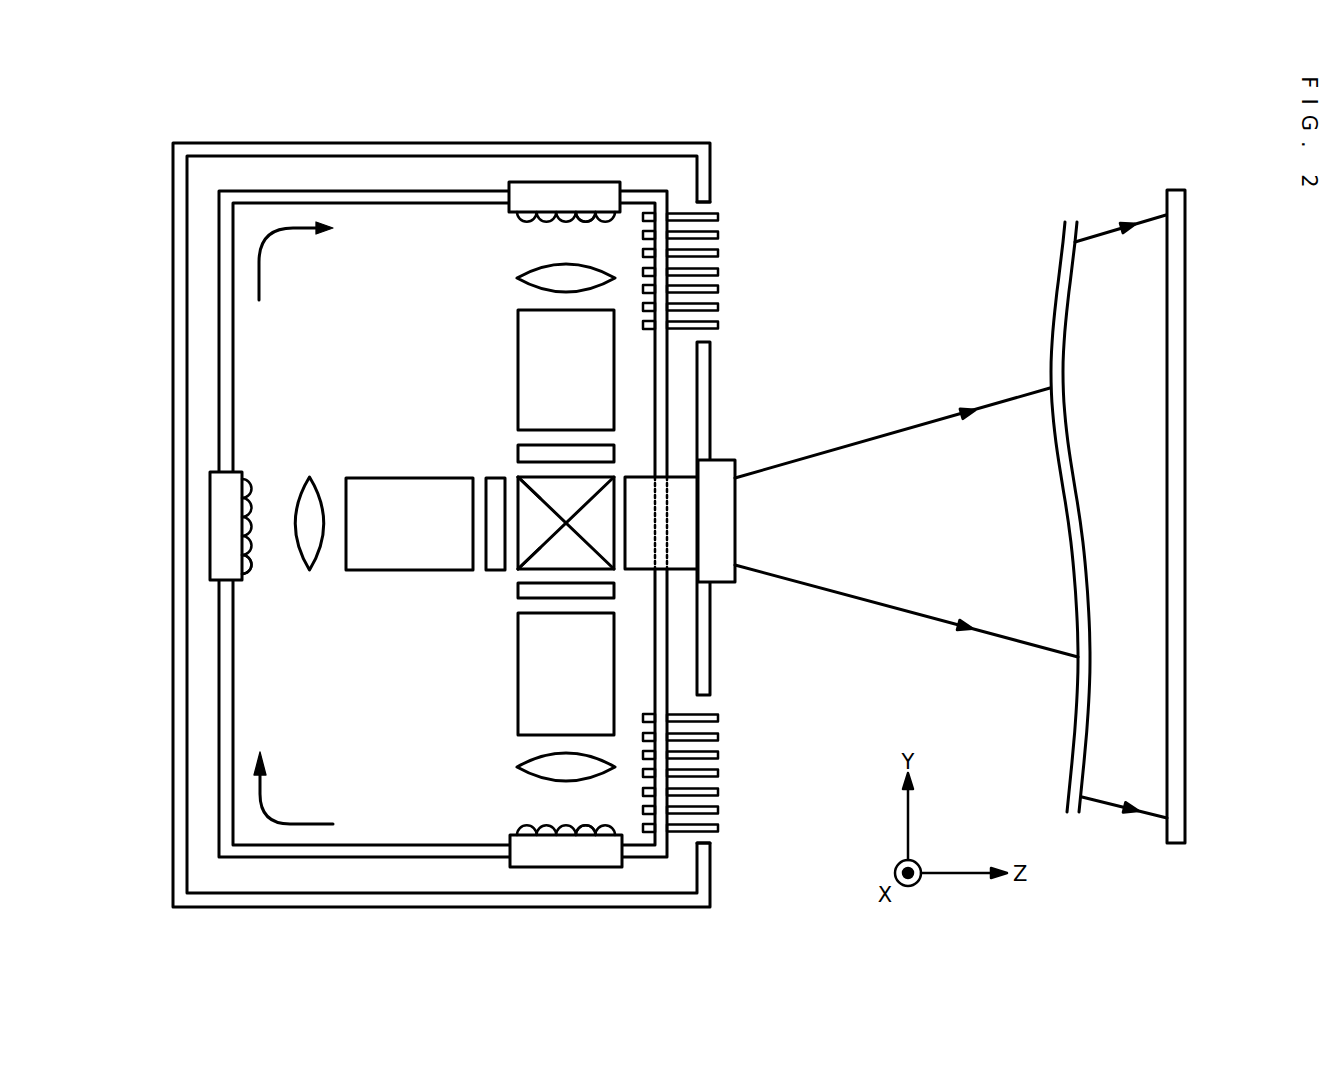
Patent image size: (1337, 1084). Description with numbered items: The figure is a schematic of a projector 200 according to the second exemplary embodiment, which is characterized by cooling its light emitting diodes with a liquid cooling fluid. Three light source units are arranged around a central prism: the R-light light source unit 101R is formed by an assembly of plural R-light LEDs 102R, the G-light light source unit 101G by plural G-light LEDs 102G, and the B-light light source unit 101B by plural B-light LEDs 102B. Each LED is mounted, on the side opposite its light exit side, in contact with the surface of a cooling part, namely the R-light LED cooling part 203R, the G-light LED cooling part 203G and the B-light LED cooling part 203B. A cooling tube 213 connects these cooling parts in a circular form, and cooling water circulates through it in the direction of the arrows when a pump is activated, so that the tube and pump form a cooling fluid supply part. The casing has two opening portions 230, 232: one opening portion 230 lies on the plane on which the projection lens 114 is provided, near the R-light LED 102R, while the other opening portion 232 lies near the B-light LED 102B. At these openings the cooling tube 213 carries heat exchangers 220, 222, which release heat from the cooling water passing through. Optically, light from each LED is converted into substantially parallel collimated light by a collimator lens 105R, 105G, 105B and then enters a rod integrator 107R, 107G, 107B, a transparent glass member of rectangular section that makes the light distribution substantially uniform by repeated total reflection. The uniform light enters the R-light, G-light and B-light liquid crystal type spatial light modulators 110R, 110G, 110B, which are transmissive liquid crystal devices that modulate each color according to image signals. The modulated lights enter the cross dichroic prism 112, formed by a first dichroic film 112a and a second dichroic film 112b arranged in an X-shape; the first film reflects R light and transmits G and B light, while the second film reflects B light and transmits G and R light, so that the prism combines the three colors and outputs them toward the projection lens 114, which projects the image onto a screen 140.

The projector 200 is at (852, 186).
The B-light LED cooling part 203B is at (564, 182).
The G-light LED cooling part 203G is at (209, 505).
The R-light LED cooling part 203R is at (590, 867).
The B-light light source unit 101B is at (500, 224).
The G-light light source unit 101G is at (252, 466).
The R-light light source unit 101R is at (502, 818).
The B-light LED 102B is at (602, 227).
The G-light LED 102G is at (256, 575).
The R-light LED 102R is at (592, 820).
The collimator lens 105B is at (519, 278).
The collimator lens 105G is at (310, 477).
The collimator lens 105R is at (521, 765).
The rod integrator 107B is at (518, 357).
The rod integrator 107G is at (397, 478).
The rod integrator 107R is at (519, 700).
The B-light liquid crystal type spatial light modulator 110B is at (612, 446).
The G-light liquid crystal type spatial light modulator 110G is at (495, 570).
The R-light liquid crystal type spatial light modulator 110R is at (522, 595).
The cross dichroic prism 112 is at (612, 492).
The first dichroic film 112a is at (522, 567).
The second dichroic film 112b is at (536, 482).
The projection lens 114 is at (730, 582).
The screen 140 is at (1176, 846).
The cooling tube 213 is at (233, 683).
The heat exchanger 220 is at (712, 805).
The heat exchanger 222 is at (710, 238).
The opening portion 230 is at (708, 845).
The opening portion 232 is at (712, 204).